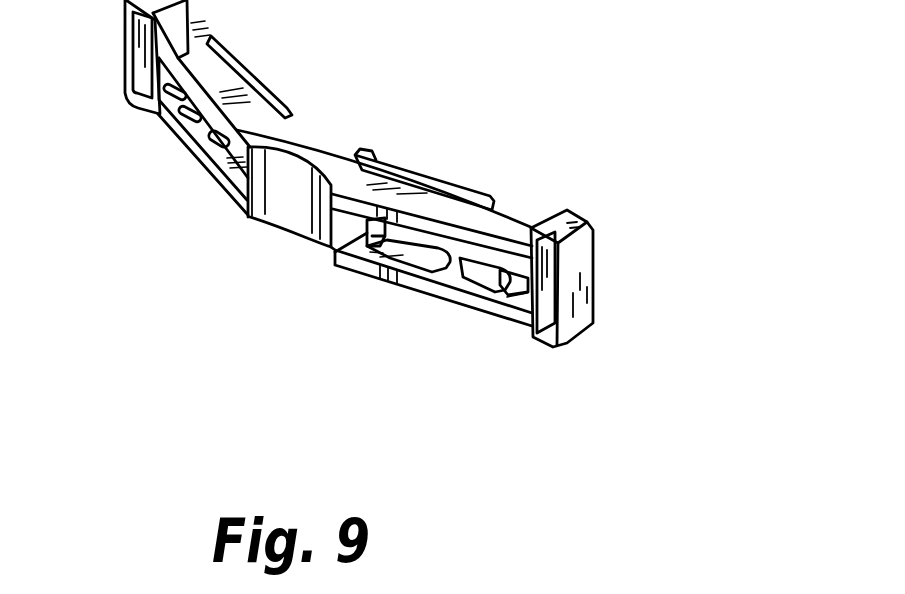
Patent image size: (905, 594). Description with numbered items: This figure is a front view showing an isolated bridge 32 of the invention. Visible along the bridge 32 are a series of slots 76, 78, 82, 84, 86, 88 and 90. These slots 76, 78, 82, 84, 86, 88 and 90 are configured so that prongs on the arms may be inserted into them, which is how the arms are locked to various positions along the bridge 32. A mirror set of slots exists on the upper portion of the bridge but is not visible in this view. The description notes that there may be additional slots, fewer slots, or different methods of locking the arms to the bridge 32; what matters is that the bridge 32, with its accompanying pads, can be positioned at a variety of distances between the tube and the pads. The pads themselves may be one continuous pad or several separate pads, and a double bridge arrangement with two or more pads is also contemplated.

The bridge 32 is at (316, 148).
The slot 76 is at (180, 137).
The slot 78 is at (215, 147).
The slot 82 is at (363, 250).
The slot 84 is at (430, 268).
The slot 86 is at (465, 285).
The slot 88 is at (147, 110).
The slot 90 is at (510, 290).